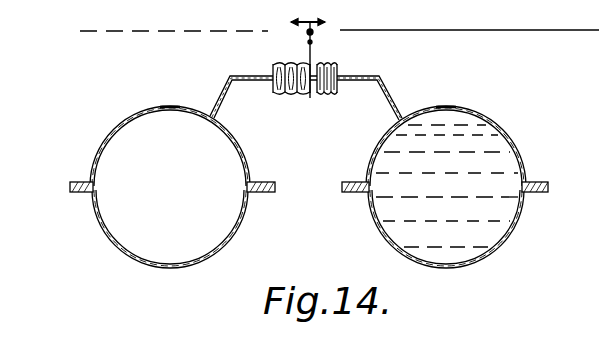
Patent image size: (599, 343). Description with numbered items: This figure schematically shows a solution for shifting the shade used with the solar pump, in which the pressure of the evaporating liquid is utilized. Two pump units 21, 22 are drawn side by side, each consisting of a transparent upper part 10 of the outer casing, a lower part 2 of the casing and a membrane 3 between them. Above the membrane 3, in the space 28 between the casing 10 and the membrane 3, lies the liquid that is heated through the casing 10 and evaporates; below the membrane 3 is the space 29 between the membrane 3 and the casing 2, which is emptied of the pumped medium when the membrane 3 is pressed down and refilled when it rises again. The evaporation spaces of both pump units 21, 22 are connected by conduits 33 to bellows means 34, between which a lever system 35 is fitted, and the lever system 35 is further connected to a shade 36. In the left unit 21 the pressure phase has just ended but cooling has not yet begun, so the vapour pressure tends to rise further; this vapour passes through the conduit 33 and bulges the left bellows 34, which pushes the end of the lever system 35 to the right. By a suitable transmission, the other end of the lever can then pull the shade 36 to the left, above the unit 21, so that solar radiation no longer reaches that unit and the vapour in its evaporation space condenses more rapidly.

The lower part of the casing 2 is at (207, 262).
The membrane 3 is at (98, 216).
The transparent upper part of the outer casing 10 is at (152, 106).
The left pump unit 21 is at (82, 182).
The right pump unit 22 is at (536, 192).
The space between the casing and the membrane 28 is at (124, 146).
The space between the membrane and the casing 29 is at (128, 250).
The conduit 33 is at (226, 90).
The bellows means 34 is at (318, 96).
The lever system 35 is at (308, 46).
The shade 36 is at (521, 31).